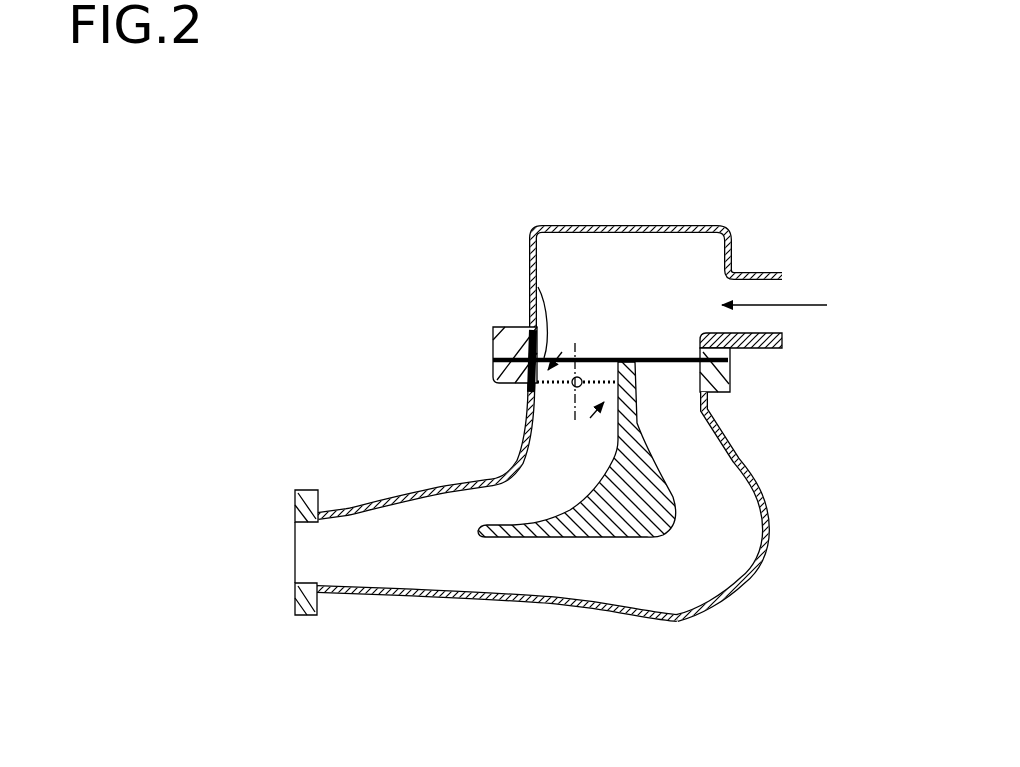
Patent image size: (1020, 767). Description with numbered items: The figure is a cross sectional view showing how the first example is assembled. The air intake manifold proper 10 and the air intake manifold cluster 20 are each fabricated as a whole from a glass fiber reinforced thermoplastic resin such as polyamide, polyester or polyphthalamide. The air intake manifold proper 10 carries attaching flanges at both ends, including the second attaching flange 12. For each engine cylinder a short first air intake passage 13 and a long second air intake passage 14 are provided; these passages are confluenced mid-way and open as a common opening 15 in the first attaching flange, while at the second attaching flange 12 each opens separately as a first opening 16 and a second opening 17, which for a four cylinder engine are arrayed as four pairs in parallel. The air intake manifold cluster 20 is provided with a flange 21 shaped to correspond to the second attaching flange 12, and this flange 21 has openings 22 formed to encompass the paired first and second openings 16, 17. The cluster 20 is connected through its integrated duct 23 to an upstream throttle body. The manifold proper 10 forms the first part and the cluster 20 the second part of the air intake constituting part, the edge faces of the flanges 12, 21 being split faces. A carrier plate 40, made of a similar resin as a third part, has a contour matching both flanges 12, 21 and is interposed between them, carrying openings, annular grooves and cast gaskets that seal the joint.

The air intake manifold proper 10 is at (637, 636).
The second attaching flange 12 is at (728, 389).
The first air intake passage 13 is at (557, 474).
The second air intake passage 14 is at (710, 466).
The common opening 15 is at (295, 553).
The first opening 16 is at (531, 280).
The second opening 17 is at (666, 356).
The air intake manifold cluster 20 is at (706, 200).
The flange 21 is at (500, 327).
The openings 22 is at (627, 356).
The integrated duct 23 is at (767, 270).
The carrier plate 40 is at (490, 358).